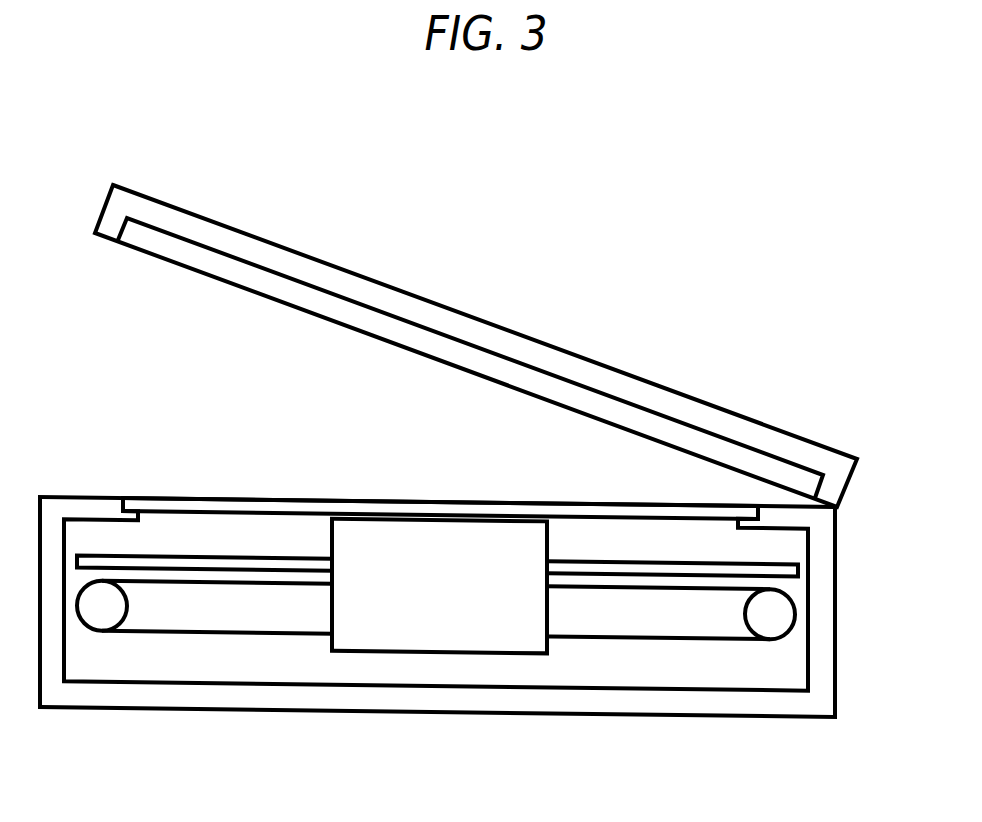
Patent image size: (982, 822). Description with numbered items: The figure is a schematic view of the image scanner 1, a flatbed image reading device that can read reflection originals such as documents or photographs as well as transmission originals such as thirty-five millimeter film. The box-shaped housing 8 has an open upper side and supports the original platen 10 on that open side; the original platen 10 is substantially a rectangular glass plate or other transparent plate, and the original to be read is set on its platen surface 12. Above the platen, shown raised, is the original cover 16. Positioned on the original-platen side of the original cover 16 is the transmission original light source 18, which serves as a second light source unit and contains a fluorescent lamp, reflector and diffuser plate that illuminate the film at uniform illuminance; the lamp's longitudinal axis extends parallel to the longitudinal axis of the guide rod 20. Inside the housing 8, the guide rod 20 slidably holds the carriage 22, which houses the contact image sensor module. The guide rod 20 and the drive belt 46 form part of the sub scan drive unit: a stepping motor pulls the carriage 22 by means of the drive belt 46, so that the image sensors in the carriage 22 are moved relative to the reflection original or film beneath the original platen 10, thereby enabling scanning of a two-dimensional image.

The image scanner 1 is at (760, 268).
The housing 8 is at (777, 708).
The original platen 10 is at (128, 502).
The platen surface 12 is at (182, 486).
The original cover 16 is at (105, 210).
The transmission original light source 18 is at (413, 340).
The guide rod 20 is at (277, 560).
The carriage 22 is at (440, 647).
The drive belt 46 is at (595, 579).